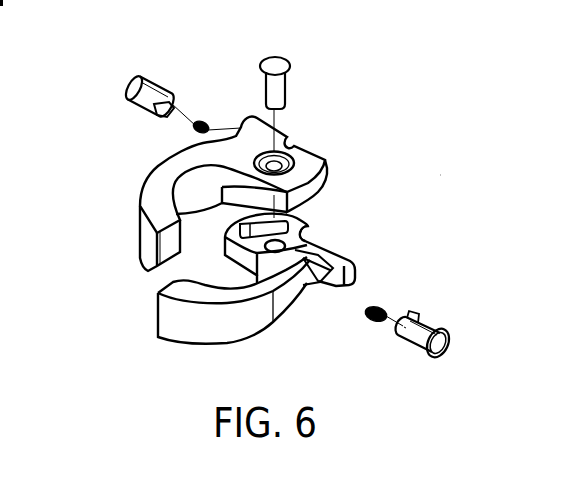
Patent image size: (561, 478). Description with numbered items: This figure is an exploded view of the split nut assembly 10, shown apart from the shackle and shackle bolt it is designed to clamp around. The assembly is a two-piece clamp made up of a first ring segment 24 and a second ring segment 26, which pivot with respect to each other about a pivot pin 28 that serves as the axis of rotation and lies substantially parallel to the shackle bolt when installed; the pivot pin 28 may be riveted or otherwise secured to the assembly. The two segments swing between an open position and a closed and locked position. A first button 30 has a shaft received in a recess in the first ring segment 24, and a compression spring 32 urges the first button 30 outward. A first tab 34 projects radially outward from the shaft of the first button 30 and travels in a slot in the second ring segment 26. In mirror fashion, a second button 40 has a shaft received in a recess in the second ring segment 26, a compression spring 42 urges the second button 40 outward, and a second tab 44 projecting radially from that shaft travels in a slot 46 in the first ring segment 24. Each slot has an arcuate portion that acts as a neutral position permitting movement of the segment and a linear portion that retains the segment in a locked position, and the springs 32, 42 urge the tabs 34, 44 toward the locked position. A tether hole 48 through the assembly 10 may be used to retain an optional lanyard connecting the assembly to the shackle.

The split nut assembly 10 is at (440, 175).
The first ring segment 24 is at (280, 323).
The second ring segment 26 is at (142, 203).
The pivot pin 28 is at (289, 62).
The first button 30 is at (452, 337).
The compression spring 32 is at (379, 304).
The first tab 34 is at (405, 326).
The second button 40 is at (158, 84).
The compression spring 42 is at (204, 120).
The second tab 44 is at (155, 117).
The slot 46 is at (300, 234).
The tether hole 48 is at (306, 238).